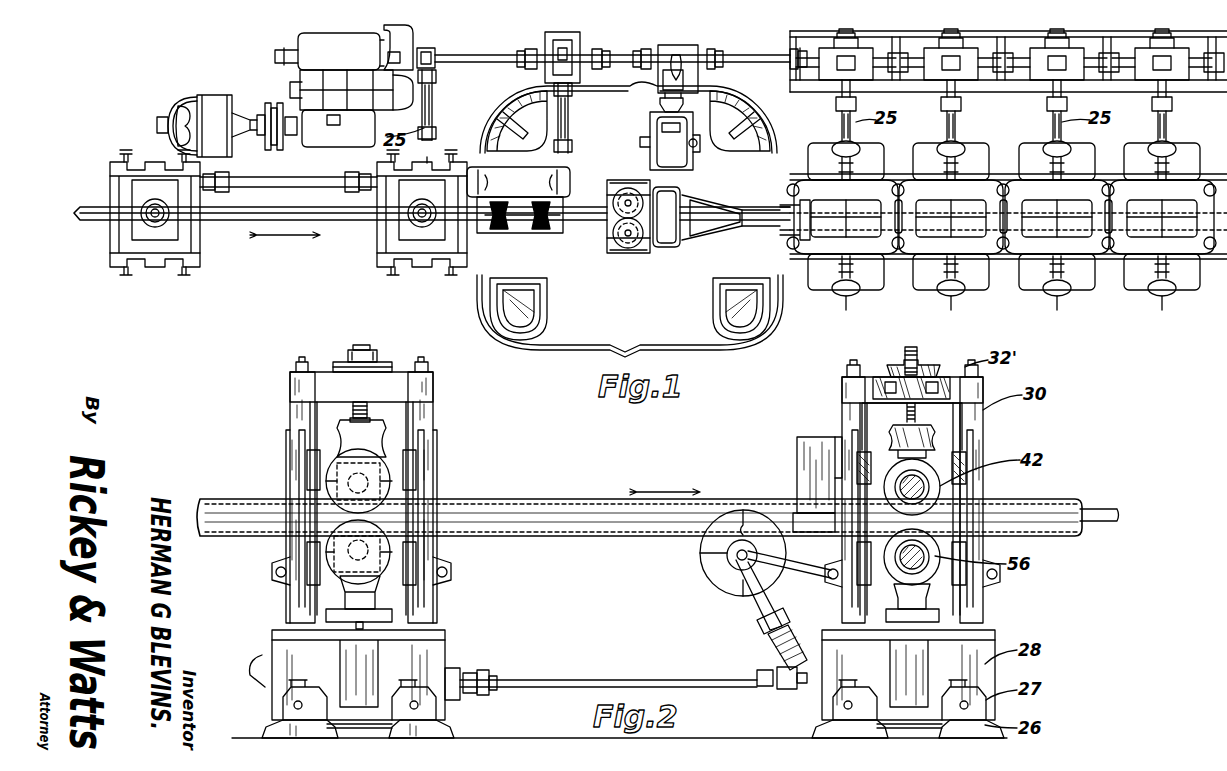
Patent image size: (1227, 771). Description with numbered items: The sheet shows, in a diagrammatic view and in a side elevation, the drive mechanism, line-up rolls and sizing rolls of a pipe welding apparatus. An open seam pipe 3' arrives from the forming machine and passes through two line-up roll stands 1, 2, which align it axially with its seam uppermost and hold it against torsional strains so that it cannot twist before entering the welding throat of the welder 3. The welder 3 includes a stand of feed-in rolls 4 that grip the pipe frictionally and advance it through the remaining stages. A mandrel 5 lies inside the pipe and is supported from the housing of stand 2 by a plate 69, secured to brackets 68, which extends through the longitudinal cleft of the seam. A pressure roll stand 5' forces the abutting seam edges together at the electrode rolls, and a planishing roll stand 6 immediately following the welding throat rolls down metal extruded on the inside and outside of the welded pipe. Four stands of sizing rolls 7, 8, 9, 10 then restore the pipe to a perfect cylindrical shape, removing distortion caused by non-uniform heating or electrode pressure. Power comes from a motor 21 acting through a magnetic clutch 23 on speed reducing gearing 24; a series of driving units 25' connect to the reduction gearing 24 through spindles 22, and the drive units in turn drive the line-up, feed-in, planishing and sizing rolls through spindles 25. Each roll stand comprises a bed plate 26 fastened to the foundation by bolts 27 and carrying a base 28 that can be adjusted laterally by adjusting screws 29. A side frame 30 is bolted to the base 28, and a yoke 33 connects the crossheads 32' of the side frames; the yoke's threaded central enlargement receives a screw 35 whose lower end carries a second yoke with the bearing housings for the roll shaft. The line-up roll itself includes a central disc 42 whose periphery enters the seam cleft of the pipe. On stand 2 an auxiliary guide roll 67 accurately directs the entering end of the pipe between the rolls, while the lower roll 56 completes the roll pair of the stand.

In FIG. 1, the line-up roll stand 1 is at (197, 238).
In FIG. 2, the line-up roll stand 1 is at (430, 445).
In FIG. 1, the line-up roll stand 2 is at (426, 268).
In FIG. 2, the line-up roll stand 2 is at (983, 445).
In FIG. 1, the welder 3 is at (630, 321).
In FIG. 1, the open seam pipe 3' is at (428, 233).
In FIG. 2, the open seam pipe 3' is at (639, 497).
In FIG. 1, the feed-in rolls 4 is at (557, 236).
In FIG. 2, the mandrel 5 is at (1099, 499).
In FIG. 1, the pressure roll stand 5' is at (628, 233).
In FIG. 1, the planishing roll stand 6 is at (670, 200).
In FIG. 1, the sizing roll stand 7 is at (866, 290).
In FIG. 1, the sizing roll stand 8 is at (972, 290).
In FIG. 1, the sizing roll stand 9 is at (1077, 290).
In FIG. 1, the sizing roll stand 10 is at (1182, 290).
In FIG. 1, the motor 21 is at (228, 95).
In FIG. 1, the spindles 22 is at (498, 56).
In FIG. 1, the magnetic clutch 23 is at (274, 103).
In FIG. 1, the speed reducing gearing 24 is at (383, 115).
In FIG. 1, the spindles 25 is at (579, 118).
In FIG. 1, the driving units 25' is at (1008, 49).
In FIG. 2, the bed plate 26 is at (440, 725).
In FIG. 2, the bolts 27 is at (432, 670).
In FIG. 2, the base 28 is at (430, 636).
In FIG. 2, the adjusting screws 29 is at (440, 700).
In FIG. 2, the side frame 30 is at (433, 412).
In FIG. 2, the crossheads 32' is at (396, 348).
In FIG. 2, the yoke 33 is at (938, 377).
In FIG. 2, the screw 35 is at (370, 410).
In FIG. 2, the central disc 42 is at (392, 478).
In FIG. 2, the lower roll 56 is at (385, 527).
In FIG. 2, the auxiliary guide roll 67 is at (712, 577).
In FIG. 2, the brackets 68 is at (825, 437).
In FIG. 2, the plate 69 is at (810, 488).